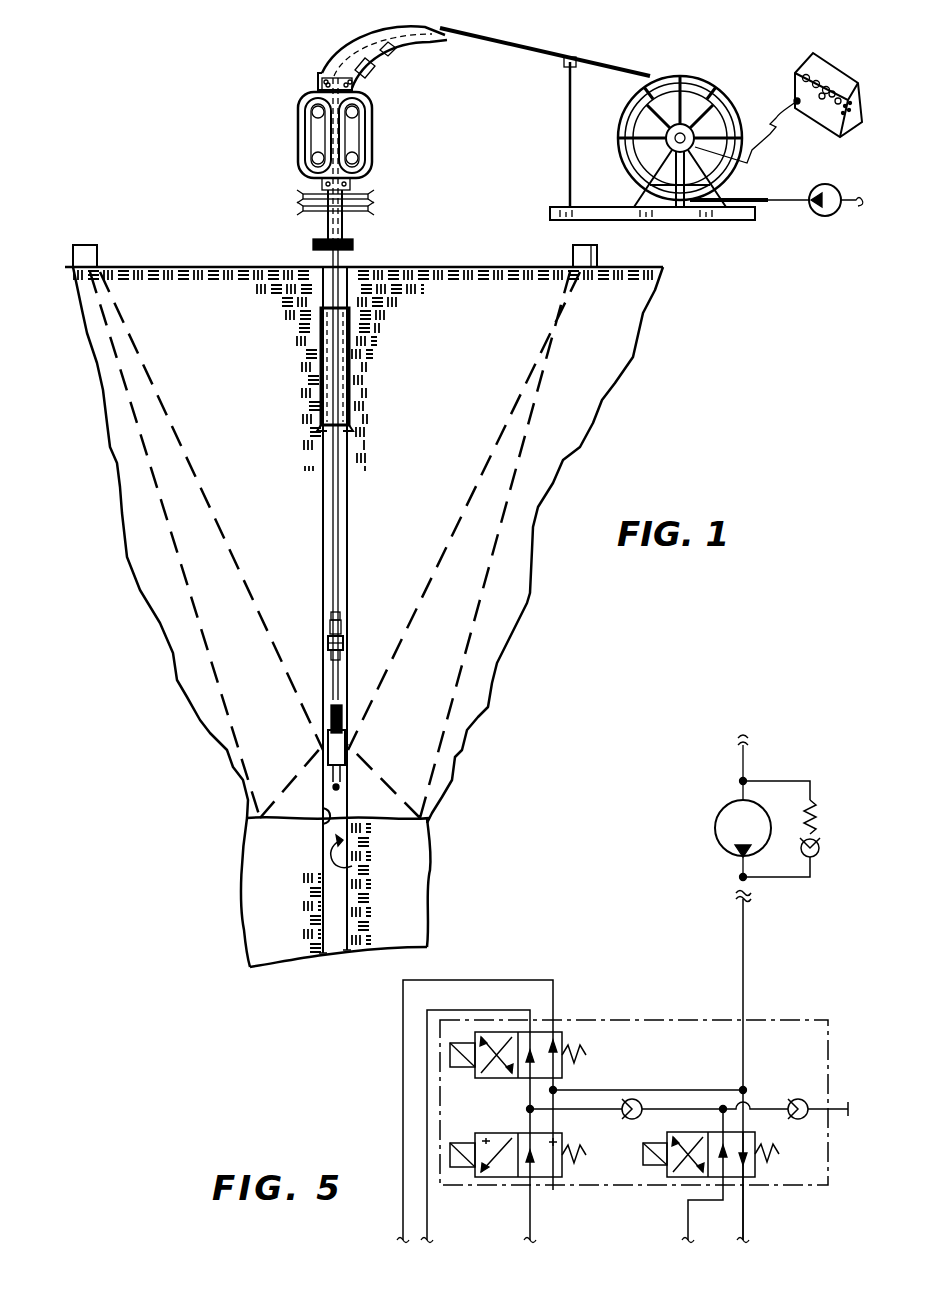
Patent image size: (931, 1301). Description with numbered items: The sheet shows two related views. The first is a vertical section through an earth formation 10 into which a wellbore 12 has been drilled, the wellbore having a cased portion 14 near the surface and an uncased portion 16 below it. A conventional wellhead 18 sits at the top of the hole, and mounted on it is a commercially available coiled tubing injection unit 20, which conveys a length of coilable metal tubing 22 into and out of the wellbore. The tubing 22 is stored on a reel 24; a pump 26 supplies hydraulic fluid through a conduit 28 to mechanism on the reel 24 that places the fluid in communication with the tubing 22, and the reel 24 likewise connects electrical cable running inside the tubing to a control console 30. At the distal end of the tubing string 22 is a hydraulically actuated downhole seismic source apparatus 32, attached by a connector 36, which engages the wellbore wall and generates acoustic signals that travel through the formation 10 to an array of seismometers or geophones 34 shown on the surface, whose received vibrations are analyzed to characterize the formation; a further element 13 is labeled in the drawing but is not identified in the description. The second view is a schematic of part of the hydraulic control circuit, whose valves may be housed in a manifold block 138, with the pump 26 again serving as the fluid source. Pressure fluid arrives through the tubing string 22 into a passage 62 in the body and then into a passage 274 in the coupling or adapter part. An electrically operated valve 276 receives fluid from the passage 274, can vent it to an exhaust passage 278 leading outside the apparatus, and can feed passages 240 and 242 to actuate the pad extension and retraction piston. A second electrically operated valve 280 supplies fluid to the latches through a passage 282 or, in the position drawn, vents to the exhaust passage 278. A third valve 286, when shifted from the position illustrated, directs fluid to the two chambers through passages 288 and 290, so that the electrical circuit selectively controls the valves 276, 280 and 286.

In FIG. 1, the earth formation 10 is at (583, 447).
In FIG. 1, the wellbore 12 is at (352, 866).
In FIG. 1, the producing formation 13 is at (322, 828).
In FIG. 1, the cased portion 14 is at (350, 400).
In FIG. 1, the uncased portion 16 is at (348, 598).
In FIG. 1, the wellhead 18 is at (352, 257).
In FIG. 1, the coiled tubing injection unit 20 is at (372, 137).
In FIG. 1, the coiled tubing 22 is at (502, 44).
In FIG. 1, the reel 24 is at (688, 76).
In FIG. 1, the pump 26 is at (826, 216).
In FIG. 5, the pump 26 is at (715, 828).
In FIG. 1, the conduit 28 is at (755, 222).
In FIG. 1, the control console 30 is at (838, 60).
In FIG. 1, the downhole seismic source apparatus 32 is at (347, 723).
In FIG. 1, the seismometers 34 is at (92, 246).
In FIG. 1, the connector 36 is at (330, 625).
In FIG. 5, the passage 62 is at (752, 893).
In FIG. 5, the manifold block 138 is at (800, 1020).
In FIG. 5, the passage 240 is at (428, 1238).
In FIG. 5, the passage 242 is at (403, 1238).
In FIG. 5, the passage 274 is at (746, 950).
In FIG. 5, the electrical power operated valve 276 is at (553, 1032).
In FIG. 5, the exhaust passage 278 is at (822, 1108).
In FIG. 5, the second electrically operated valve 280 is at (553, 1188).
In FIG. 5, the passage 282 is at (531, 1238).
In FIG. 5, the valve 286 is at (755, 1170).
In FIG. 5, the passage 288 is at (688, 1238).
In FIG. 5, the passage 290 is at (745, 1238).